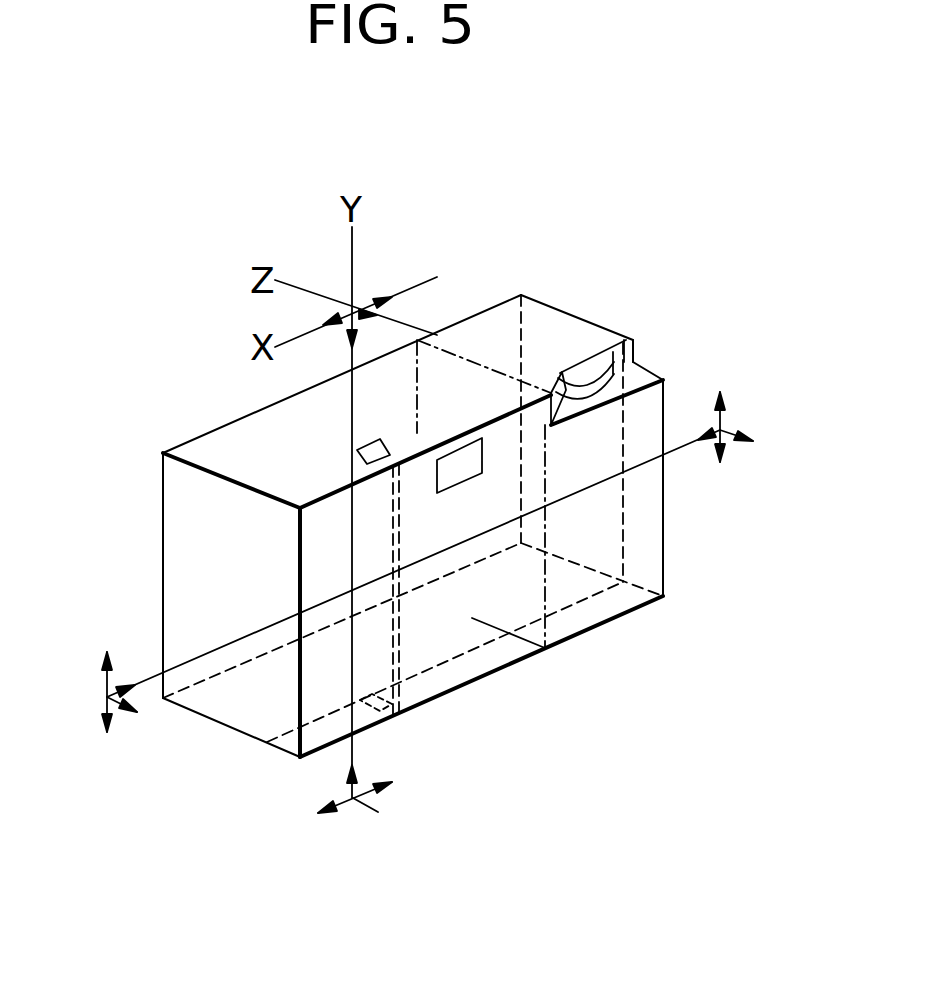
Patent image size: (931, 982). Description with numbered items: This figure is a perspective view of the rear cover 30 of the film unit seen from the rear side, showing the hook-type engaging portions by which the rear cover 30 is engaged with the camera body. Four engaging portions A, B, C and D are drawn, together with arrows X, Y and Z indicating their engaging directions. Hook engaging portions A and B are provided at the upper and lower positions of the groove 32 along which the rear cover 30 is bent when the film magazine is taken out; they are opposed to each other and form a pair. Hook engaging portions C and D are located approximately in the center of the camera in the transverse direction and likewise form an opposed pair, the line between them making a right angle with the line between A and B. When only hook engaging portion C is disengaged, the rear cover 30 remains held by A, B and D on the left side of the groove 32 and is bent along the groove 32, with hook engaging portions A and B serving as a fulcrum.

The rear cover 30 is at (676, 509).
The groove 32 is at (400, 638).
The hook engaging portion A is at (357, 450).
The hook engaging portion B is at (362, 715).
The hook engaging portion C is at (635, 452).
The hook engaging portion D is at (277, 613).